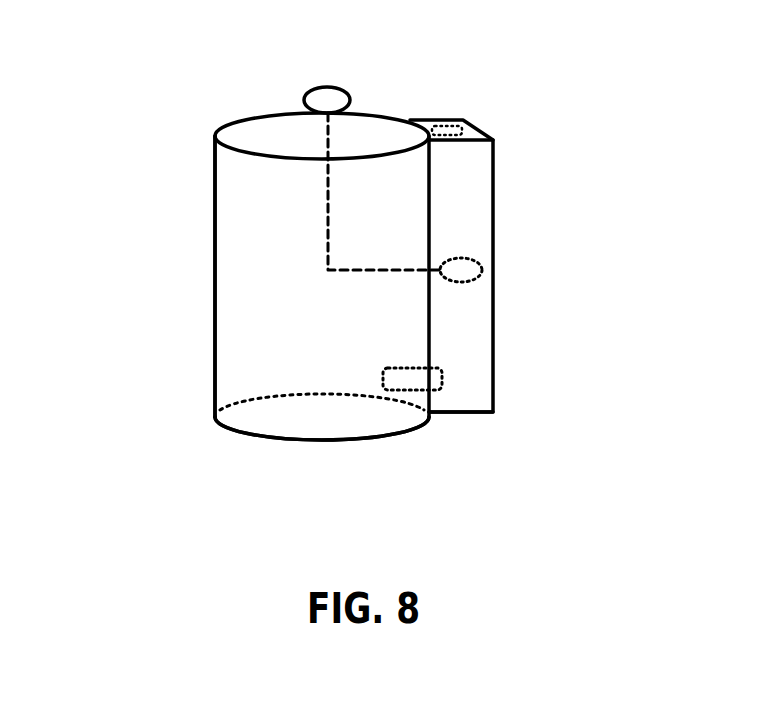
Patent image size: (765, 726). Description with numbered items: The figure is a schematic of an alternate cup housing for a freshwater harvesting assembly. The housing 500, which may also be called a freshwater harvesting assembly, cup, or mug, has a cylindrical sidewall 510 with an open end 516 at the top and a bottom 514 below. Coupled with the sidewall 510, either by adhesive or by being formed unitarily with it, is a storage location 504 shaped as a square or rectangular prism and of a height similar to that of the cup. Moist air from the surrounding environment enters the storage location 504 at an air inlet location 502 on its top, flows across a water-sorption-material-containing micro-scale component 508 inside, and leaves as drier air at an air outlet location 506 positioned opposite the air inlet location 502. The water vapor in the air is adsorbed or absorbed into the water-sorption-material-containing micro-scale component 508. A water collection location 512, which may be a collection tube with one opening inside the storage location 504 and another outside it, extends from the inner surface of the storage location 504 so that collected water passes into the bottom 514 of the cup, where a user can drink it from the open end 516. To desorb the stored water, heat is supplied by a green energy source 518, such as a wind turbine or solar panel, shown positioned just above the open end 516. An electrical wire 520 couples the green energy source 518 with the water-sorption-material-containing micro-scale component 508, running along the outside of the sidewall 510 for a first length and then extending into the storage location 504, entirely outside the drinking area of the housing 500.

The housing 500 is at (152, 105).
The air inlet location 502 is at (460, 138).
The storage location 504 is at (492, 237).
The air outlet location 506 is at (467, 413).
The water-sorption-material-containing micro-scale component 508 is at (472, 280).
The sidewall 510 is at (252, 295).
The water collection location 512 is at (403, 382).
The bottom 514 is at (268, 413).
The open end 516 is at (268, 132).
The green energy source 518 is at (343, 88).
The electrical wire 520 is at (328, 177).